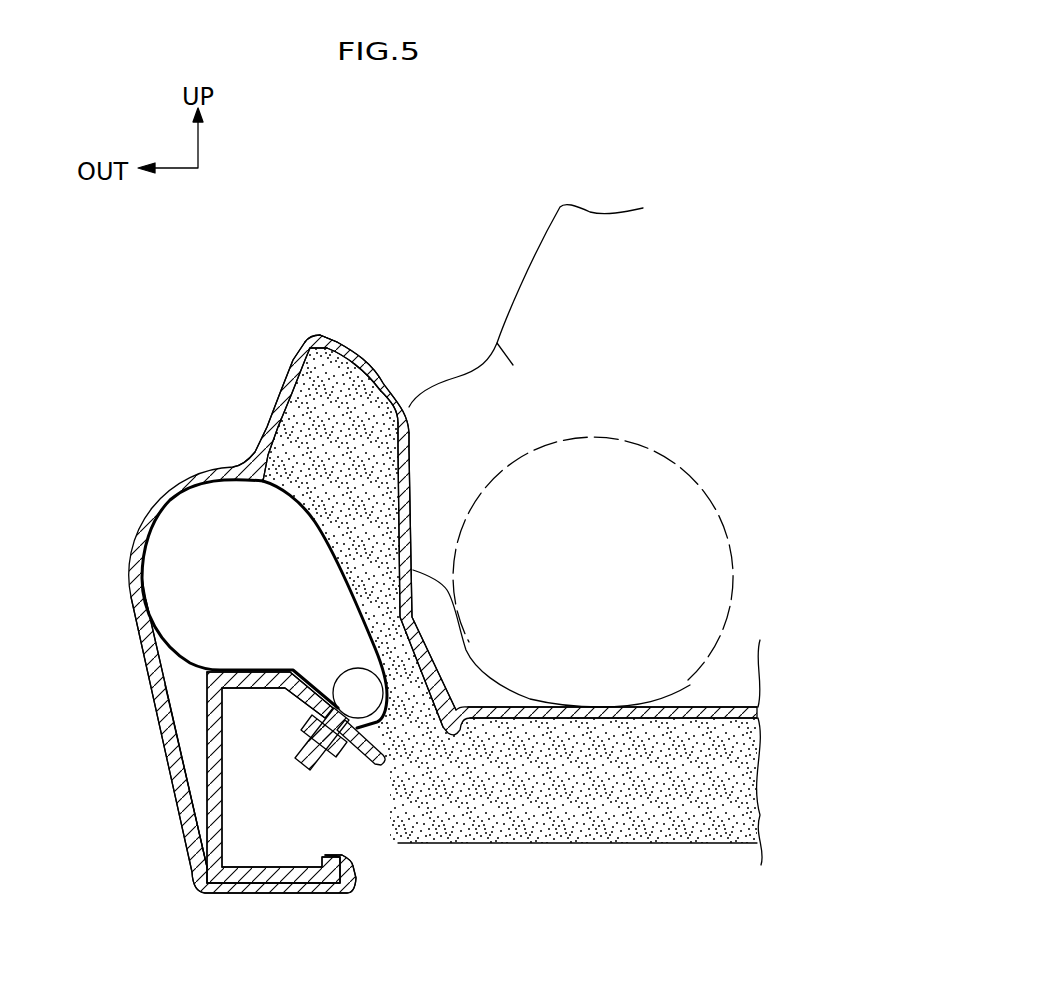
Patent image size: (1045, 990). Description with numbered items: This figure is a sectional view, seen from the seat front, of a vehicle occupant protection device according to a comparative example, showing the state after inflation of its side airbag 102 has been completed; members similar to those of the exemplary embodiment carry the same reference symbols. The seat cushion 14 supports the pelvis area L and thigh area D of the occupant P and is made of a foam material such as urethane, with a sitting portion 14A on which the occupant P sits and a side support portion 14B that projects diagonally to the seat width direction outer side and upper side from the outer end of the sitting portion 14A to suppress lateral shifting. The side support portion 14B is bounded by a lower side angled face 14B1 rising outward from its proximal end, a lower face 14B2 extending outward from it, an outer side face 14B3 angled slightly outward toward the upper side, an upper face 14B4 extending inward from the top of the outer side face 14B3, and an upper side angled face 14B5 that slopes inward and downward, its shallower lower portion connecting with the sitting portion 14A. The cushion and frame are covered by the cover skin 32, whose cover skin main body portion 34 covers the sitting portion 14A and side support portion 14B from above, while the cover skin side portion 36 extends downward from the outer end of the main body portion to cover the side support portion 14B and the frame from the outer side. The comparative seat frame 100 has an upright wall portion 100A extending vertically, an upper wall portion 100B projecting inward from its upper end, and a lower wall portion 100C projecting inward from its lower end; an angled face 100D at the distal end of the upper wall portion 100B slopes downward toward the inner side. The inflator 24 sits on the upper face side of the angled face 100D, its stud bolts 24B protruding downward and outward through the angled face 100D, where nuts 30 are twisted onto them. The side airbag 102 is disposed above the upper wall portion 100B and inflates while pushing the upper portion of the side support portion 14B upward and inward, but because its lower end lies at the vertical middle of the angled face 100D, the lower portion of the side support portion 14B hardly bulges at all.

The seat cushion 14 is at (583, 878).
The sitting portion 14A is at (607, 730).
The side support portion 14B is at (348, 393).
The lower side angled face 14B1 is at (353, 623).
The lower face 14B2 is at (287, 502).
The outer side face 14B3 is at (280, 393).
The upper face 14B4 is at (380, 393).
The upper side angled face 14B5 is at (413, 537).
The inflator 24 is at (329, 669).
The stud bolt 24B is at (307, 758).
The nut 30 is at (347, 752).
The cover skin 32 is at (300, 334).
The cover skin main body portion 34 is at (411, 457).
The cover skin side portion 36 is at (140, 667).
The seat frame 100 is at (198, 771).
The upright wall portion 100A is at (207, 740).
The upper wall portion 100B is at (240, 690).
The lower wall portion 100C is at (277, 893).
The angled face 100D is at (360, 767).
The side airbag 102 is at (176, 665).
The occupant P is at (521, 250).
The pelvis area L is at (497, 343).
The thigh area D is at (640, 447).